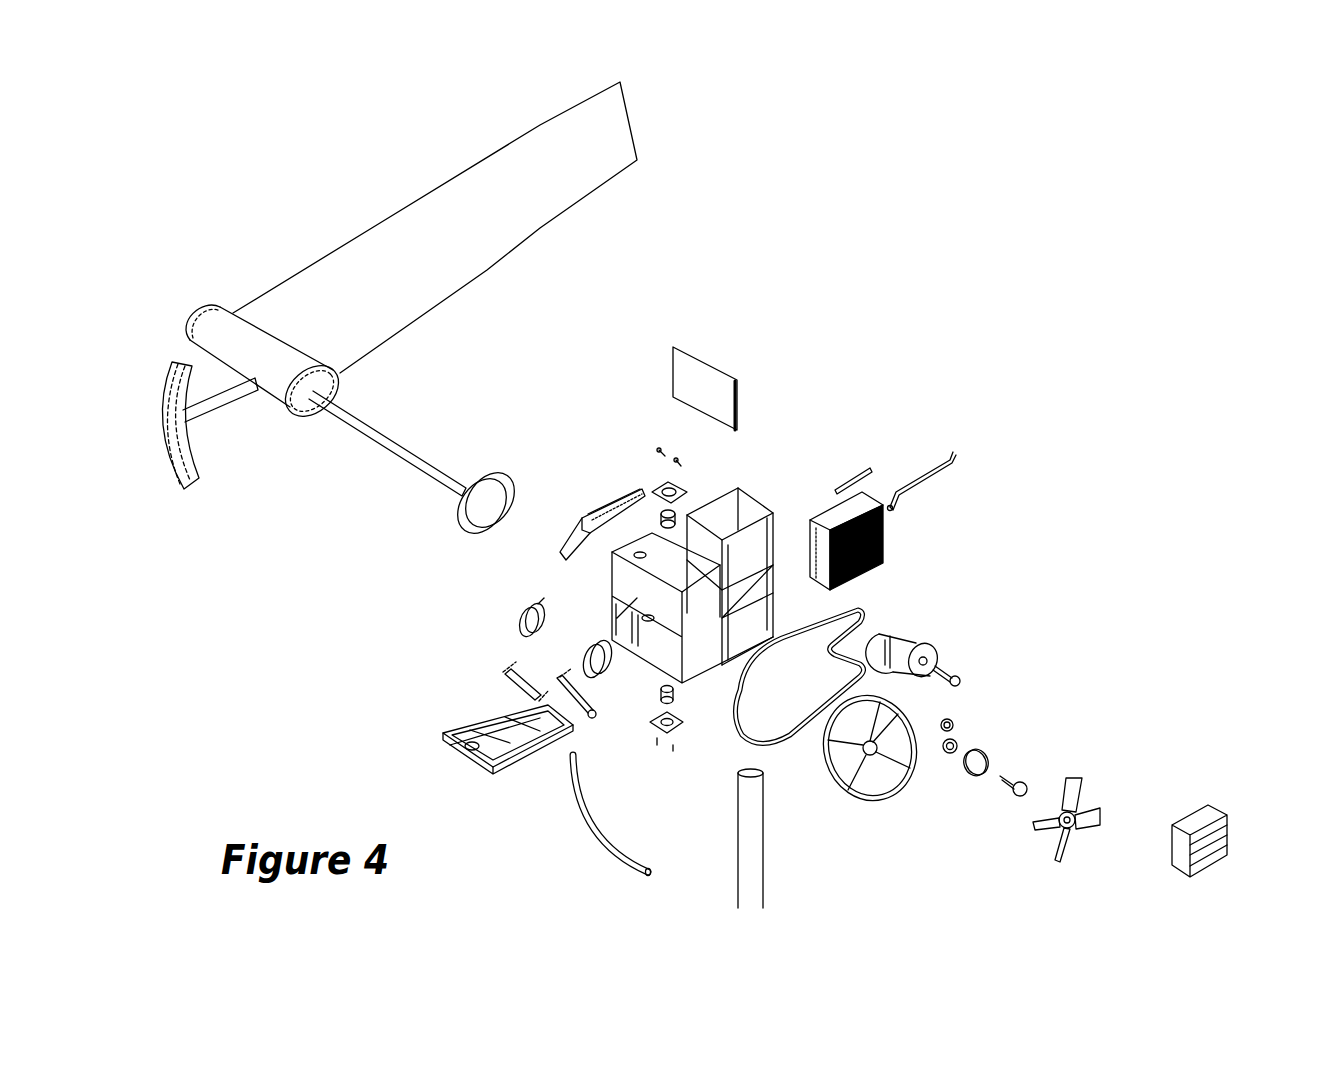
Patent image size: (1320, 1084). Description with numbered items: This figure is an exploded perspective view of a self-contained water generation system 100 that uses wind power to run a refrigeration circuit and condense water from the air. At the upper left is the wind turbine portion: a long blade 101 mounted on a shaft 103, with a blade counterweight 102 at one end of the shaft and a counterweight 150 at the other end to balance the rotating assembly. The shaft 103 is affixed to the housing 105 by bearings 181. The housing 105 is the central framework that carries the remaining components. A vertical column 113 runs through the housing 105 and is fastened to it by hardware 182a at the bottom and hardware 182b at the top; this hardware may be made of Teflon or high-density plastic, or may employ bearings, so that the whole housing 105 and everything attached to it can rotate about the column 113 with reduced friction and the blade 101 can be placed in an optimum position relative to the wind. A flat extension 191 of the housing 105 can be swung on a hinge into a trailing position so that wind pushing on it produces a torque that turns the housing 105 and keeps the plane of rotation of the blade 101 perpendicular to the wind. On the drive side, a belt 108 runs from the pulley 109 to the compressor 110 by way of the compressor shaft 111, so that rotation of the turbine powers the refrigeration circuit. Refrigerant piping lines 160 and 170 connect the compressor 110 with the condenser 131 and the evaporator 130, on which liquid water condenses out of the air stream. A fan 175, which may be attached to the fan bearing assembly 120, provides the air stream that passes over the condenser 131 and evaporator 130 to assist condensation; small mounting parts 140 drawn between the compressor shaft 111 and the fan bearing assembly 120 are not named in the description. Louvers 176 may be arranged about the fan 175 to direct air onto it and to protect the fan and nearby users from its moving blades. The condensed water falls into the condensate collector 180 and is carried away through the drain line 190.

The system 100 is at (1105, 240).
The blade 101 is at (378, 224).
The blade counterweight 102 is at (157, 438).
The shaft 103 is at (394, 440).
The housing 105 is at (758, 500).
The belt 108 is at (787, 640).
The pulley 109 is at (878, 797).
The compressor 110 is at (925, 633).
The compressor shaft 111 is at (953, 670).
The column 113 is at (735, 803).
The fan bearing assembly 120 is at (1003, 787).
The evaporator 130 is at (883, 545).
The condenser 131 is at (619, 506).
The bearing assembly 140 is at (953, 713).
The counterweight 150 is at (466, 528).
The refrigerant piping line 160 is at (946, 460).
The refrigerant piping line 170 is at (495, 675).
The fan 175 is at (1082, 792).
The louvers 176 is at (1227, 827).
The condensate collector 180 is at (455, 718).
The bearings 181 is at (600, 643).
The hardware 182a is at (653, 680).
The hardware 182b is at (670, 438).
The drain line 190 is at (617, 853).
The extension 191 is at (698, 358).